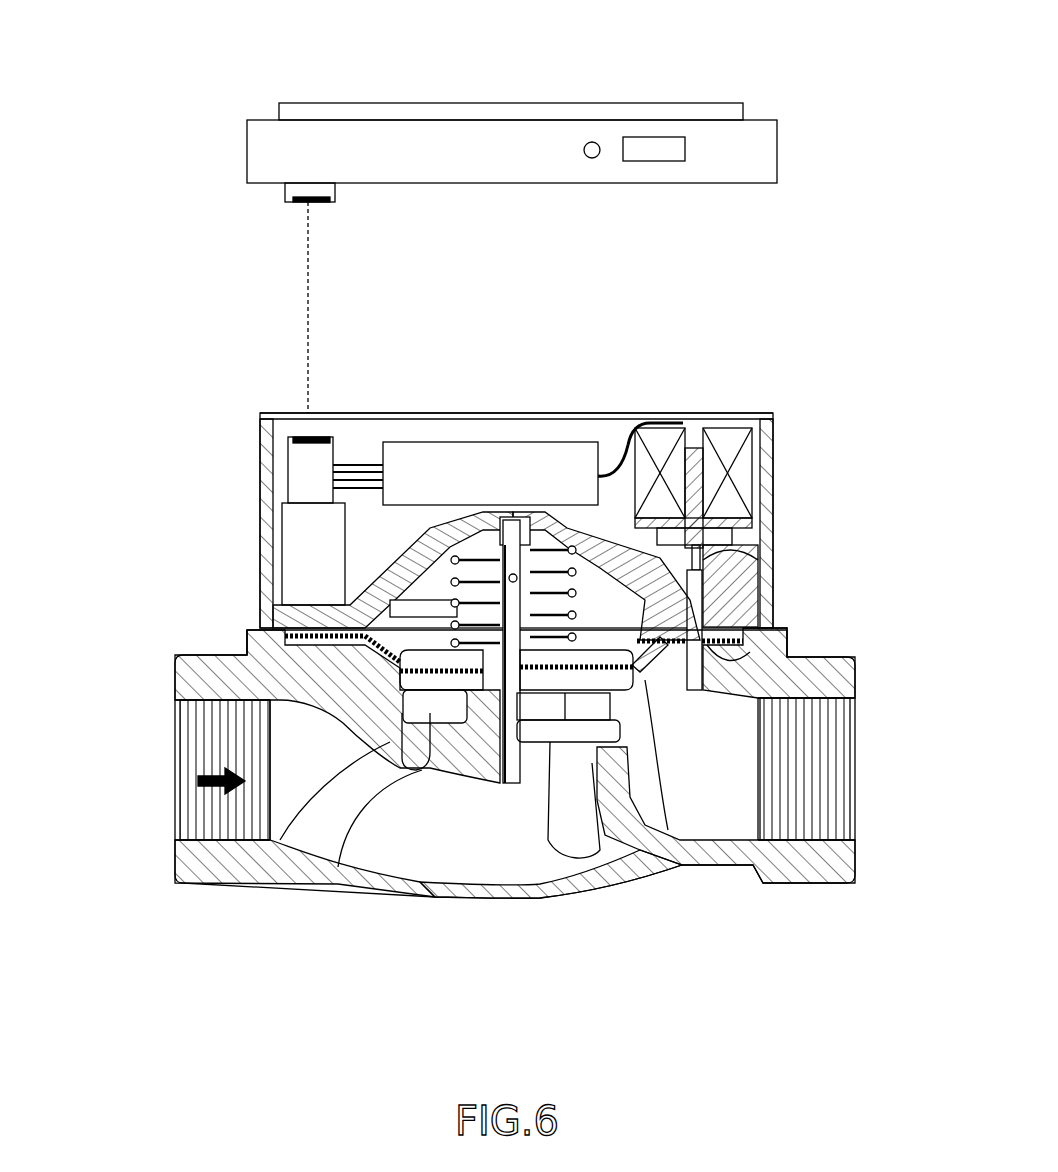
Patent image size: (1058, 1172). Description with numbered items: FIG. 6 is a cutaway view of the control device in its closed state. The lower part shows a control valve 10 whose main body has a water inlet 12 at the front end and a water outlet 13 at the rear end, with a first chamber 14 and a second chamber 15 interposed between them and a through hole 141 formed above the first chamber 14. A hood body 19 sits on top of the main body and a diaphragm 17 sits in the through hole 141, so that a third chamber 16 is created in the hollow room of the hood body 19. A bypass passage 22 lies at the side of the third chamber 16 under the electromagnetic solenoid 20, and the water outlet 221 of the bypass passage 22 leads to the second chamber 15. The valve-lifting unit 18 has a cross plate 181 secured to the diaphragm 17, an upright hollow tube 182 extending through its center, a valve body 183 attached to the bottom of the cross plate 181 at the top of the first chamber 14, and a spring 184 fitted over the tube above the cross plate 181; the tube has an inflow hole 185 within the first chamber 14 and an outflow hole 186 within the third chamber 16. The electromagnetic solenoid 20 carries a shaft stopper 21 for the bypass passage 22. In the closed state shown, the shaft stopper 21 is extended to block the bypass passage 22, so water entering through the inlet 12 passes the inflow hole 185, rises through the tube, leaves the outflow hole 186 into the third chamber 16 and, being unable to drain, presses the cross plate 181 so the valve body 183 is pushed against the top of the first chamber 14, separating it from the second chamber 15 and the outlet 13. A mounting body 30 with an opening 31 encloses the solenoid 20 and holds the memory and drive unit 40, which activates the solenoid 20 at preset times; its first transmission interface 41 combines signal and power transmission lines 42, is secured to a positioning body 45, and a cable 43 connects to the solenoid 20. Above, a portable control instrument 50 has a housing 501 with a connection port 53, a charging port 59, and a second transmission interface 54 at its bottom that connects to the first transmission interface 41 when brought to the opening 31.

The control valve 10 is at (115, 675).
The water inlet 12 is at (222, 883).
The water outlet 13 is at (818, 885).
The first chamber 14 is at (425, 820).
The through hole 141 is at (338, 867).
The second chamber 15 is at (735, 770).
The third chamber 16 is at (362, 567).
The diaphragm 17 is at (280, 840).
The valve-lifting unit 18 is at (748, 962).
The cross plate 181 is at (643, 842).
The upright hollow tube 182 is at (550, 858).
The valve body 183 is at (457, 772).
The spring 184 is at (683, 862).
The inflow hole 185 is at (511, 782).
The outflow hole 186 is at (400, 570).
The hood body 19 is at (188, 680).
The electromagnetic solenoid 20 is at (750, 472).
The shaft stopper 21 is at (758, 522).
The bypass passage 22 is at (768, 620).
The water outlet of the bypass passage 221 is at (787, 637).
The mounting body 30 is at (773, 565).
The opening 31 is at (548, 412).
The memory and drive unit 40 is at (447, 462).
The first transmission interface 41 is at (300, 465).
The signal and power transmission lines 42 is at (362, 462).
The cable 43 is at (616, 450).
The positioning body 45 is at (300, 528).
The portable control instrument 50 is at (548, 84).
The housing 501 is at (678, 183).
The connection port 53 is at (668, 150).
The second transmission interface 54 is at (285, 192).
The charging port 59 is at (592, 158).